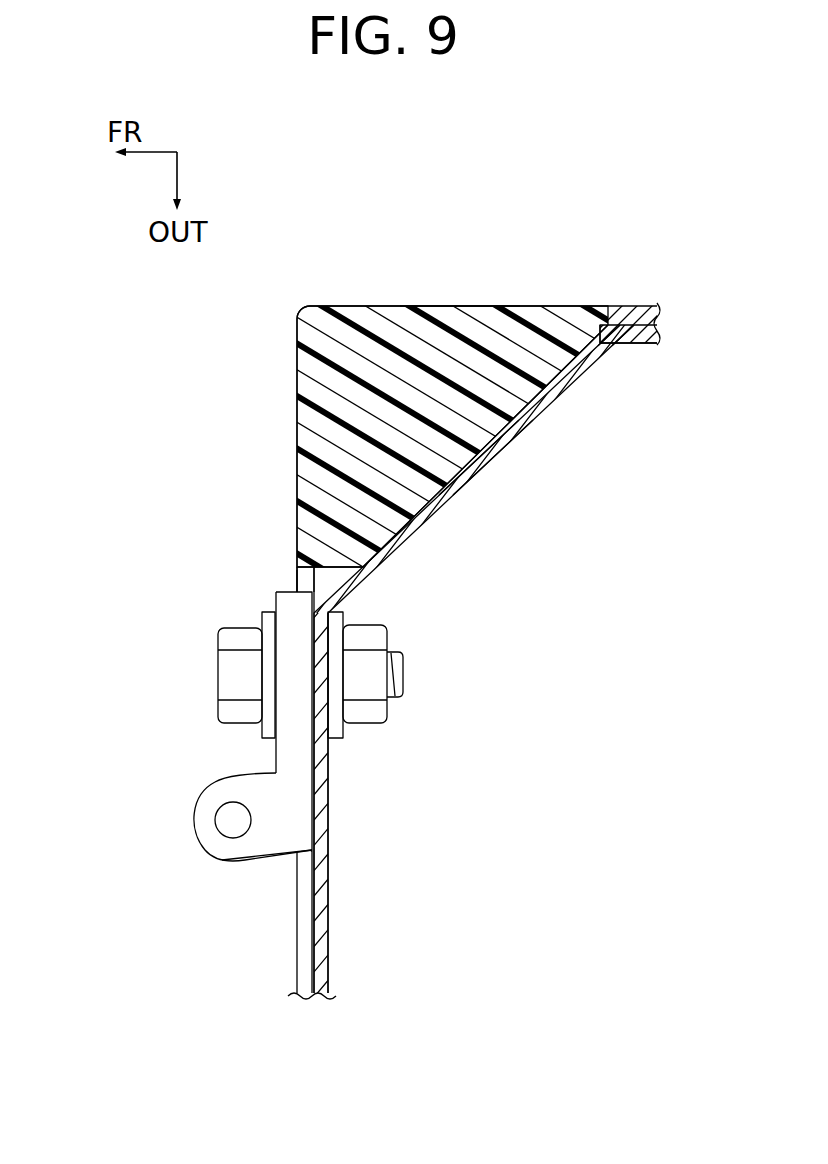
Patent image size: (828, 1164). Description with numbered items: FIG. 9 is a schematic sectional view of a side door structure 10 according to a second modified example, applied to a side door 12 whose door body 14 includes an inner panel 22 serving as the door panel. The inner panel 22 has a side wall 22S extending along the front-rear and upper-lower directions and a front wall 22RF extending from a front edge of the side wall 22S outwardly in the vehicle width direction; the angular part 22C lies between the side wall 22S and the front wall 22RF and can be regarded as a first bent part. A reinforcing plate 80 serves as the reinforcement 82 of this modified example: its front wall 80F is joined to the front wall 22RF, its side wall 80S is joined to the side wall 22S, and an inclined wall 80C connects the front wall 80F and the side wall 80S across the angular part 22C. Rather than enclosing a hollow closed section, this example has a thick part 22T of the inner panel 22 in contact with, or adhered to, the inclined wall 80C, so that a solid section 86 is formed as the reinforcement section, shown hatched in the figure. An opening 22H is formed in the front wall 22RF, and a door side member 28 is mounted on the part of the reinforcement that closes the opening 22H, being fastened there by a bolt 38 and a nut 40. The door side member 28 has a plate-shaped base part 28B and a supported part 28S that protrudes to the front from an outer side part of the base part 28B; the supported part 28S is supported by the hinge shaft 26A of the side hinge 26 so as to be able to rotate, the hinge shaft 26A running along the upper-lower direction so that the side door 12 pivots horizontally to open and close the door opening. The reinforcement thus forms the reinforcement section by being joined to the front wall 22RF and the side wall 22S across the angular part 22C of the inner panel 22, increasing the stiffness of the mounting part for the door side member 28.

The side door structure 10 is at (366, 579).
The side door 12 is at (366, 579).
The door body 14 is at (565, 597).
The inner panel 22 is at (537, 296).
The angular part 22C is at (306, 306).
The thick part 22T is at (424, 337).
The side wall 22S is at (638, 312).
The opening 22H is at (233, 541).
The front wall 22RF is at (296, 590).
The solid section 86 is at (376, 376).
The reinforcing plate 80 is at (491, 588).
The reinforcement 82 is at (531, 478).
The side wall 80S is at (638, 333).
The inclined wall 80C is at (432, 507).
The front wall 80F is at (328, 822).
The bolt 38 is at (402, 686).
The nut 40 is at (382, 715).
The door side member 28 is at (86, 781).
The base part 28B is at (290, 750).
The supported part 28S is at (205, 828).
The side hinge 26 is at (213, 884).
The hinge shaft 26A is at (240, 834).